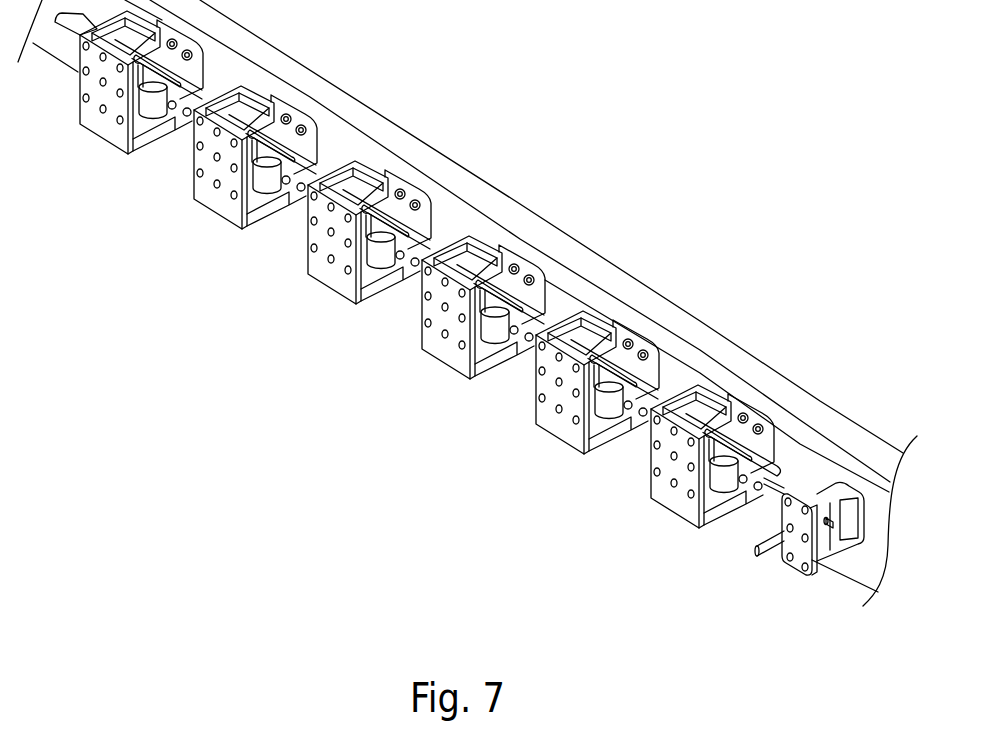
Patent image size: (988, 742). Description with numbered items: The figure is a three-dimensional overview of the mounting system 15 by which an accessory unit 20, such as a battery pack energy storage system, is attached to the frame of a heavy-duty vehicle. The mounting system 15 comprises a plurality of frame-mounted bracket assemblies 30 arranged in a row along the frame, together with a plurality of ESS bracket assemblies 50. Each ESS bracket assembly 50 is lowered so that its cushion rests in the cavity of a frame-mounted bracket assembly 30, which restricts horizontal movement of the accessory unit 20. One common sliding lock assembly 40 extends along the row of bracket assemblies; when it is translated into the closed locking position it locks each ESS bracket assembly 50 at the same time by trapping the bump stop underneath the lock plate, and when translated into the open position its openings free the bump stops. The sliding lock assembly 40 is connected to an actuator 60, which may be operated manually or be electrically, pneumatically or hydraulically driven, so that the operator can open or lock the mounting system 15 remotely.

The mounting system 15 is at (279, 206).
The accessory unit 20 is at (557, 226).
The frame-mounted bracket assembly 30 is at (200, 203).
The sliding lock assembly 40 is at (411, 254).
The ESS bracket assembly 50 is at (302, 108).
The actuator 60 is at (788, 517).